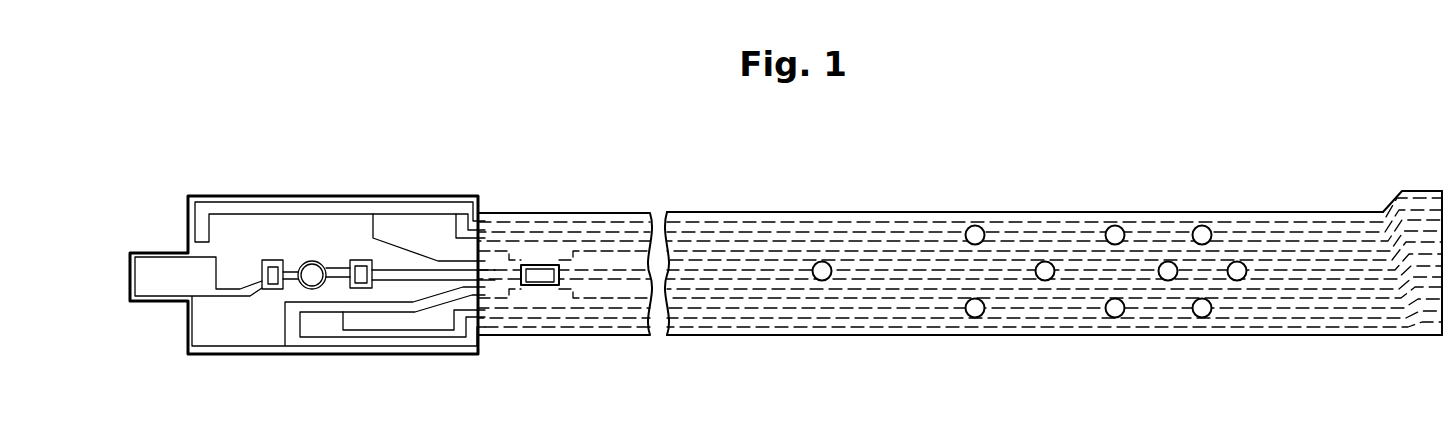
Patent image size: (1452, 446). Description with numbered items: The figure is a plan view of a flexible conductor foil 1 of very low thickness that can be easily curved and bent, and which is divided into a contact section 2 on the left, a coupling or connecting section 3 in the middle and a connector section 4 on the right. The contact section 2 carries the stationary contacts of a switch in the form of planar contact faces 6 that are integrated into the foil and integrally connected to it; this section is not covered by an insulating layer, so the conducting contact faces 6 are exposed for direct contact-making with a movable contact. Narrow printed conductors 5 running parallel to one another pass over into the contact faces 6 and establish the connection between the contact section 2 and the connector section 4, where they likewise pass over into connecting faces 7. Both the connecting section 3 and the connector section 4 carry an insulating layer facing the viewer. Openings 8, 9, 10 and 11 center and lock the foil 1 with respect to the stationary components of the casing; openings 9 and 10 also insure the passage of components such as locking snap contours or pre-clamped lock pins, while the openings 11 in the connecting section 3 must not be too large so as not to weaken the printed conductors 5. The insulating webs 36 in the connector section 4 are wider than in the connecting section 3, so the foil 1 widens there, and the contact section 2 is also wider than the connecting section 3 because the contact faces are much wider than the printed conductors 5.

The conductor foil 1 is at (1000, 170).
The contact section 2 is at (253, 192).
The connecting section 3 is at (782, 341).
The connector section 4 is at (1389, 197).
The printed conductors 5 is at (917, 318).
The contact faces 6 is at (412, 223).
The connecting faces 7 is at (1433, 312).
The opening 8 is at (317, 262).
The opening 9 is at (276, 286).
The opening 10 is at (543, 272).
The openings 11 is at (823, 263).
The insulating webs 36 is at (1424, 213).